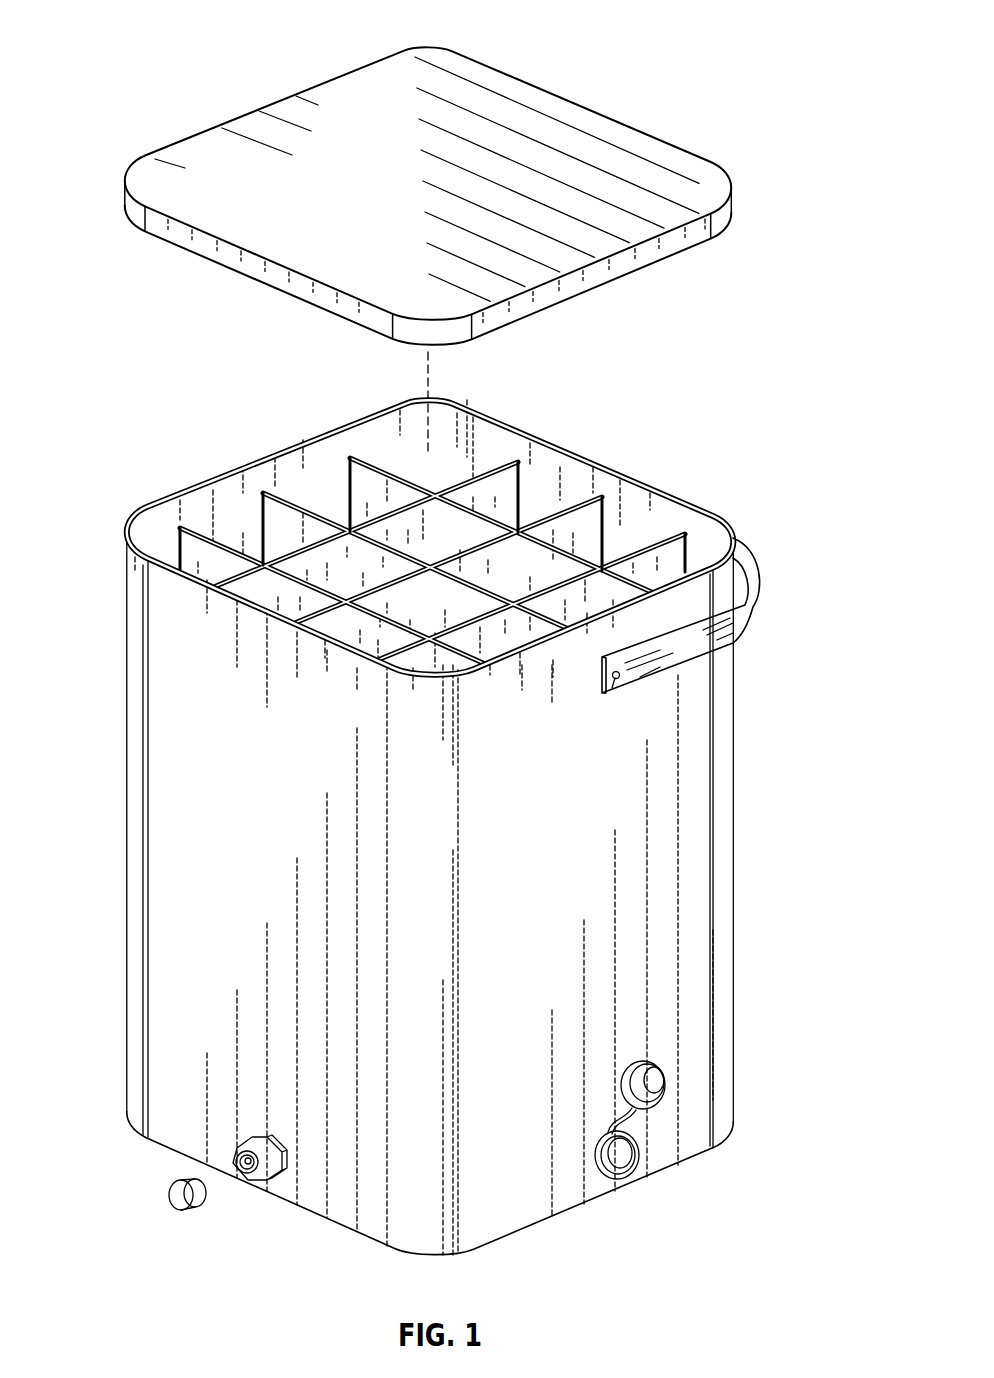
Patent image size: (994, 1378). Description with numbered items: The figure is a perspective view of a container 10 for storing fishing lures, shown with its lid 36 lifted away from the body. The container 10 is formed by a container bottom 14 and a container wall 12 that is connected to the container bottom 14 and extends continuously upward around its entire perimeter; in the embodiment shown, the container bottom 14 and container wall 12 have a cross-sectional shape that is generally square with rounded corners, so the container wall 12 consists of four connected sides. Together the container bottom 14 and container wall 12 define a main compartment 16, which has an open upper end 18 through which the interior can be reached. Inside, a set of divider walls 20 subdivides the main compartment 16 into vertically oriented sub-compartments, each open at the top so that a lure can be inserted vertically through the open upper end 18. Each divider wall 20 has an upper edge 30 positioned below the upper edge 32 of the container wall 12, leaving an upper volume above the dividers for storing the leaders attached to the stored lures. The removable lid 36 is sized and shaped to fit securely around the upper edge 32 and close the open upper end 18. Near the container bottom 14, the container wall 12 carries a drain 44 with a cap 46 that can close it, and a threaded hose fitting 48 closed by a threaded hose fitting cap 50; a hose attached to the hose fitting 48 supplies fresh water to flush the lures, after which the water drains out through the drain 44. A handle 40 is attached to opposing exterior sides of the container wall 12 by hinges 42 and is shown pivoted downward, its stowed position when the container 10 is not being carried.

The container 10 is at (118, 36).
The container wall 12 is at (432, 821).
The container bottom 14 is at (541, 1220).
The main compartment 16 is at (429, 516).
The open upper end 18 is at (391, 512).
The divider walls 20 is at (353, 478).
The upper edge of divider wall 30 is at (380, 458).
The upper edge of container wall 32 is at (352, 418).
The lid 36 is at (352, 95).
The handle 40 is at (699, 645).
The hinges 42 is at (613, 683).
The drain 44 is at (637, 1163).
The cap 46 is at (653, 1065).
The threaded hose fitting 48 is at (260, 1187).
The threaded hose fitting cap 50 is at (172, 1194).